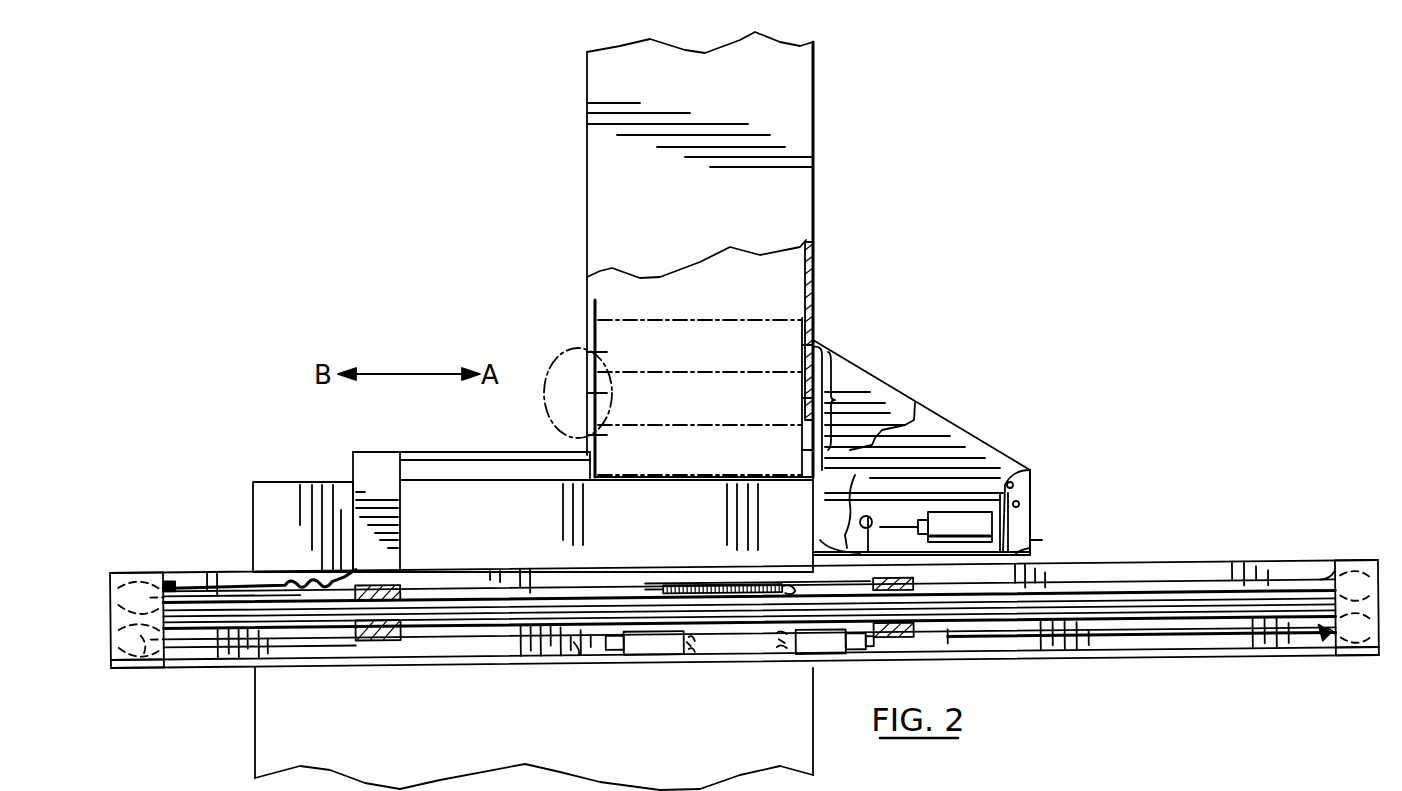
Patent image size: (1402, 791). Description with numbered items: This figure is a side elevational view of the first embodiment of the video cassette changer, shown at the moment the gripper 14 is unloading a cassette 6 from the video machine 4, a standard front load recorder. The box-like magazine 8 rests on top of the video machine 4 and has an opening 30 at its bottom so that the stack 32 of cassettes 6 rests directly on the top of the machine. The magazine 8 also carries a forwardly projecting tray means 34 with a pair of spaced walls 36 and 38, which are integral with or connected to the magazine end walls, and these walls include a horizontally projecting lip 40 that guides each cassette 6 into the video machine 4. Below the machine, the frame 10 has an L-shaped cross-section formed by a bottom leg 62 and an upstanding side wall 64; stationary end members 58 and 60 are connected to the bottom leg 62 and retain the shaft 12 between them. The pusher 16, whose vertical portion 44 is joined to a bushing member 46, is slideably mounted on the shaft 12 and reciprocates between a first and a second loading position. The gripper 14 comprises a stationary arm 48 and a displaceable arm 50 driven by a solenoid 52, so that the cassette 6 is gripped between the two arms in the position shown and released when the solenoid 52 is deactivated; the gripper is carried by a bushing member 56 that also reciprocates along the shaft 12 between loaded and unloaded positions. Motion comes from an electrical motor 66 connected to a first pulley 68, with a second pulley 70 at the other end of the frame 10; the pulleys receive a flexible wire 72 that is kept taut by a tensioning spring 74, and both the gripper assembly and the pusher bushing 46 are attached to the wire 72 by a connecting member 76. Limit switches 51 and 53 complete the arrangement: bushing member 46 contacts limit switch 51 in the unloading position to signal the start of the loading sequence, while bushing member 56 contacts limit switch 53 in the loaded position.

The video machine 4 is at (440, 485).
The cassette 6 is at (605, 393).
The magazine 8 is at (518, 143).
The frame 10 is at (1093, 680).
The shaft 12 is at (1172, 608).
The gripper 14 is at (912, 470).
The pusher 16 is at (585, 443).
The opening 30 is at (683, 475).
The stack 32 is at (836, 356).
The tray means 34 is at (982, 353).
The spaced wall 36 is at (877, 385).
The spaced wall 38 is at (1005, 462).
The lip 40 is at (1035, 542).
The vertical portion 44 is at (400, 553).
The bushing member 46 is at (377, 645).
The stationary arm 48 is at (948, 490).
The displaceable arm 50 is at (846, 509).
The limit switch 51 is at (655, 658).
The solenoid 52 is at (928, 524).
The limit switch 53 is at (808, 660).
The bushing member 56 is at (885, 645).
The stationary end member 58 is at (125, 656).
The stationary end member 60 is at (1358, 650).
The bottom leg 62 is at (1016, 660).
The upstanding side wall 64 is at (228, 586).
The motor 66 is at (170, 580).
The first pulley 68 is at (152, 650).
The pulley 70 is at (1320, 650).
The wire 72 is at (310, 650).
The tensioning spring 74 is at (733, 600).
The connecting member 76 is at (697, 590).